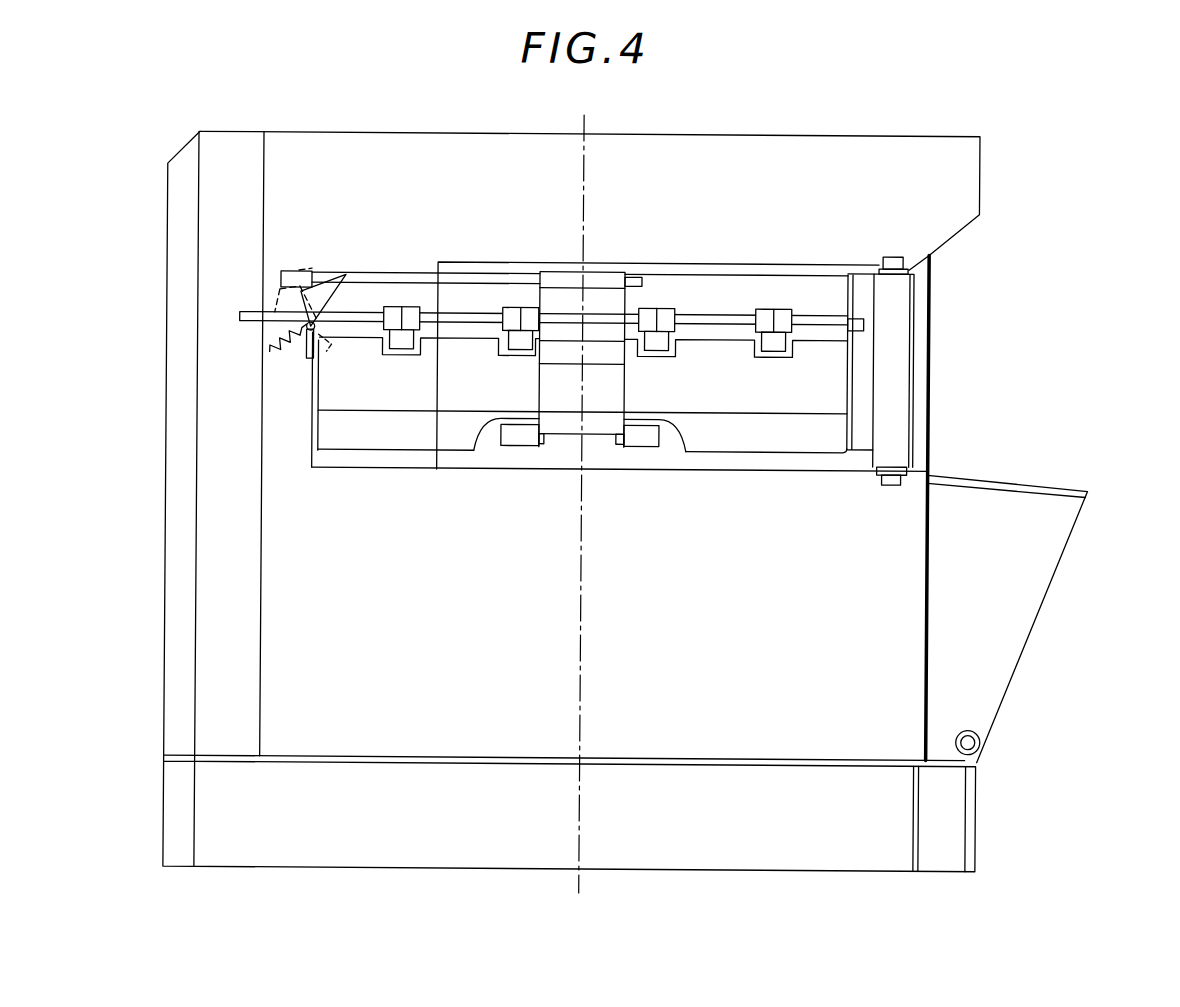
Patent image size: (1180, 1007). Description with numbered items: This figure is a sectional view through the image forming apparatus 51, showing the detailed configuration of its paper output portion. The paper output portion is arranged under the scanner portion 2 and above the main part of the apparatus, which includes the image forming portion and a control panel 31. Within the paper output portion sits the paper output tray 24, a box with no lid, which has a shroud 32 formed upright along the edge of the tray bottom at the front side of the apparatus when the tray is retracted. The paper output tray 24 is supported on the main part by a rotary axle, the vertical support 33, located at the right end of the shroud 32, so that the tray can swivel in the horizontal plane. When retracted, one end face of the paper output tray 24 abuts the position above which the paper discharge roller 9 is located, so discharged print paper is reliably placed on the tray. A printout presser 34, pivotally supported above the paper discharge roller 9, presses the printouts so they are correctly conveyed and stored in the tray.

The scanner portion 2 is at (963, 172).
The paper discharge roller 9 is at (773, 308).
The paper output tray 24 is at (738, 463).
The control panel 31 is at (1070, 487).
The shroud 32 is at (867, 423).
The vertical support 33 is at (903, 363).
The printout presser 34 is at (608, 398).
The image forming apparatus 51 is at (1012, 325).